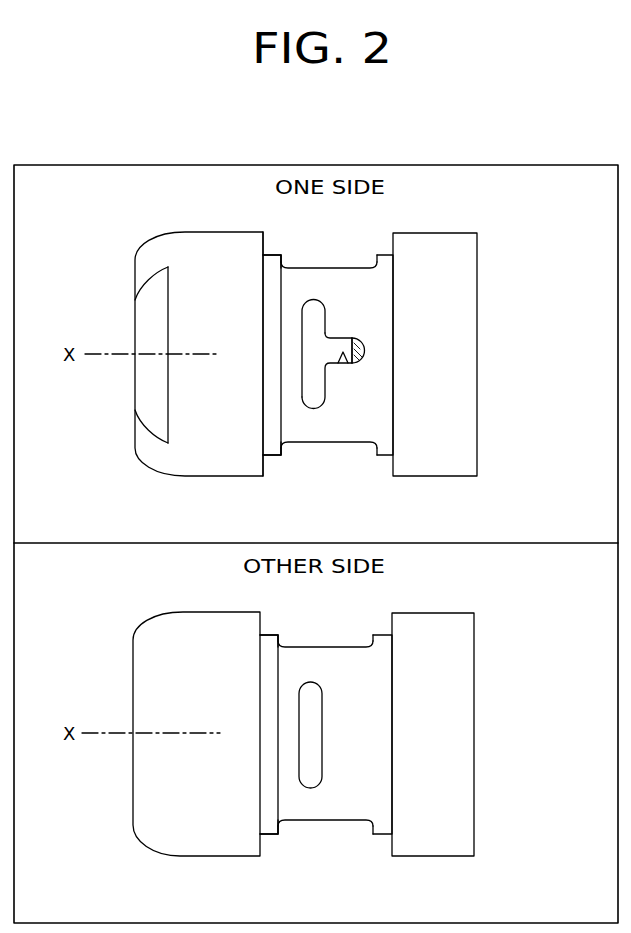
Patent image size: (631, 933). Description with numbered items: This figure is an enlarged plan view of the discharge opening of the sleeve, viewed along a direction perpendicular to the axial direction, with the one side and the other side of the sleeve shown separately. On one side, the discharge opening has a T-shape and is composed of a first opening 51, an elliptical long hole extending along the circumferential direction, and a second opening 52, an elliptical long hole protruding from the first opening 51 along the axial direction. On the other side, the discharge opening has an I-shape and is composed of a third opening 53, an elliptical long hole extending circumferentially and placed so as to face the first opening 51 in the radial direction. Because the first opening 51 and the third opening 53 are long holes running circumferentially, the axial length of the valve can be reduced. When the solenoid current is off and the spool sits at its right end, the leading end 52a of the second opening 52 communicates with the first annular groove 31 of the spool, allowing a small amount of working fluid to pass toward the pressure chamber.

The first opening 51 is at (310, 302).
The second opening 52 is at (340, 363).
The leading end 52a is at (345, 348).
The first annular groove 31 is at (357, 365).
The third opening 53 is at (311, 682).